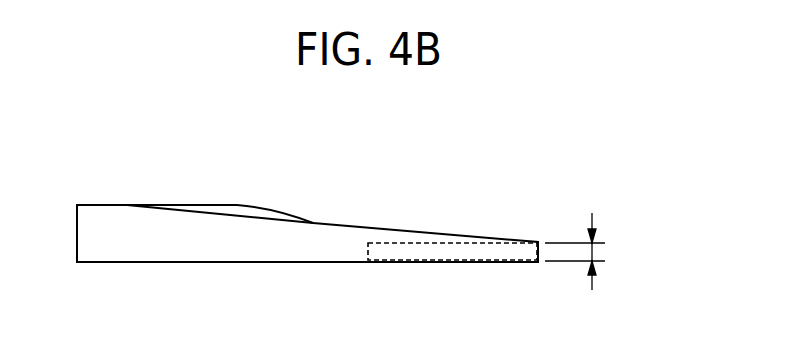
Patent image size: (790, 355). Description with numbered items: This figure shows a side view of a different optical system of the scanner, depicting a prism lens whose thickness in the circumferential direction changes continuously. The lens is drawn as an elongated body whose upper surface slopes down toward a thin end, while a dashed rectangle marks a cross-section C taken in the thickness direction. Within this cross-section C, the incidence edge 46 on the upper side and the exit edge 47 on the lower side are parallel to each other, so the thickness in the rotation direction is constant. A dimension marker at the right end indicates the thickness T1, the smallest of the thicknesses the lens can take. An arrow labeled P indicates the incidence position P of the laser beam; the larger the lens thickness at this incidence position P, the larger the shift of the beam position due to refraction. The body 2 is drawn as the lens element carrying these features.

The substrate / workpiece 2 is at (313, 233).
The incidence edge 46 is at (455, 243).
The exit edge 47 is at (453, 262).
The cross-section C is at (412, 253).
The incidence position P is at (464, 170).
The thickness T1 is at (595, 252).